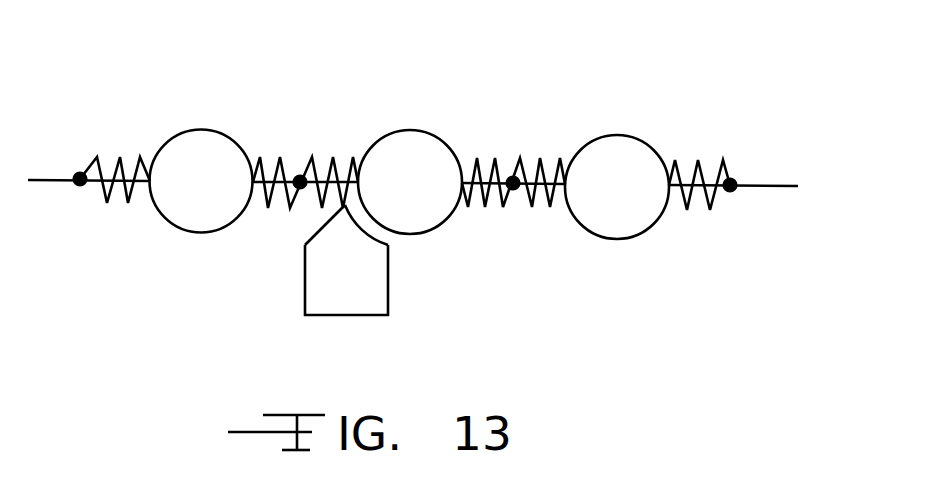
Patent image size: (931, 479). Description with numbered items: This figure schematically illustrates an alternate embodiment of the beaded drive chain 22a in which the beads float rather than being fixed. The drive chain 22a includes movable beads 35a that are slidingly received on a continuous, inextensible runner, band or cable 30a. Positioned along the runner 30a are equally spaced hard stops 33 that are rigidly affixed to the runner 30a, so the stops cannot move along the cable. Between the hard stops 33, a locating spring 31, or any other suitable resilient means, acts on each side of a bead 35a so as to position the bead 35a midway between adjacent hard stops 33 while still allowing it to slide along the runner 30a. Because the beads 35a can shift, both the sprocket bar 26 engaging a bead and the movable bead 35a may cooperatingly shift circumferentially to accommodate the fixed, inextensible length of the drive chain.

The drive chain 22a is at (567, 99).
The sprocket bar 26 is at (323, 281).
The runner 30a is at (78, 178).
The locating spring 31 is at (106, 205).
The hard stops 33 is at (84, 176).
The movable beads 35a is at (202, 142).